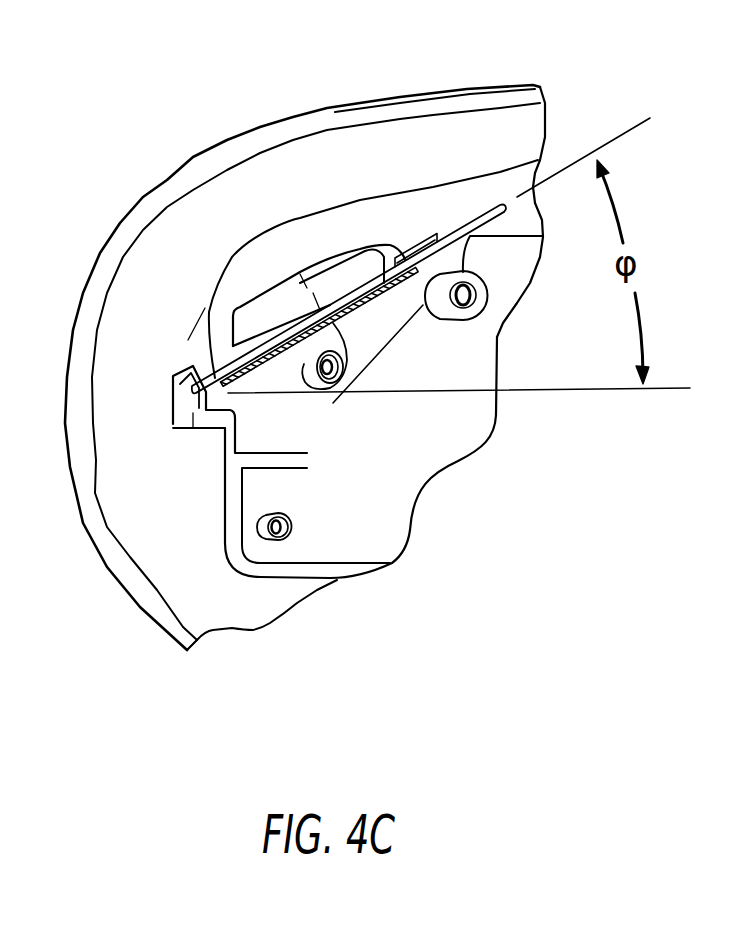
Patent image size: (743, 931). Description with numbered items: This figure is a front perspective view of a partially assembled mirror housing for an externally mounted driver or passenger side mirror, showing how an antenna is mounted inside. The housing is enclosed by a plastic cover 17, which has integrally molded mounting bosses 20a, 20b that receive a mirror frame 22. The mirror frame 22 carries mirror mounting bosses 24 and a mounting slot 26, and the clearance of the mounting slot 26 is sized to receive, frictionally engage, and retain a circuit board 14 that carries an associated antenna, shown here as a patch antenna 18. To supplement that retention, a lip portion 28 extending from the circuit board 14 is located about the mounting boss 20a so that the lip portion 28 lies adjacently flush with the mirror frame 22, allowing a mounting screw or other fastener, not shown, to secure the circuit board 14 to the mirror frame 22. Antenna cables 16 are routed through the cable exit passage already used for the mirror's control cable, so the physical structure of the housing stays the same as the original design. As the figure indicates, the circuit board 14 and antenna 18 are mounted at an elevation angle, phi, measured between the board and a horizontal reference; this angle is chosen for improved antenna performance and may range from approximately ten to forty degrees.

The circuit board 14 is at (220, 377).
The antenna cables 16 is at (463, 224).
The plastic cover 17 is at (482, 84).
The patch antenna 18 is at (292, 300).
The mounting boss 20a is at (322, 381).
The mounting boss 20b is at (280, 540).
The mirror frame 22 is at (514, 285).
The mirror mounting bosses 24 is at (475, 311).
The mounting slot 26 is at (262, 300).
The lip portion 28 is at (253, 402).